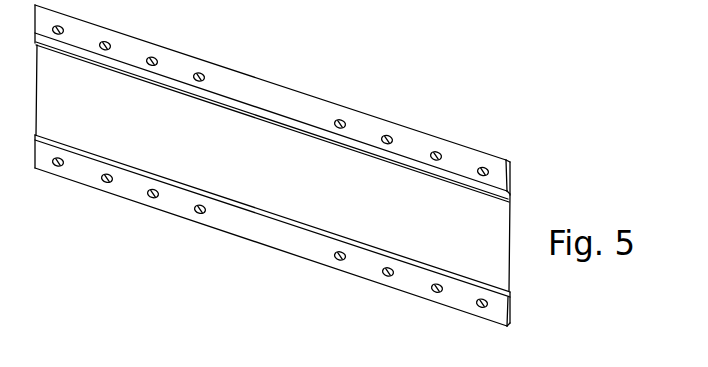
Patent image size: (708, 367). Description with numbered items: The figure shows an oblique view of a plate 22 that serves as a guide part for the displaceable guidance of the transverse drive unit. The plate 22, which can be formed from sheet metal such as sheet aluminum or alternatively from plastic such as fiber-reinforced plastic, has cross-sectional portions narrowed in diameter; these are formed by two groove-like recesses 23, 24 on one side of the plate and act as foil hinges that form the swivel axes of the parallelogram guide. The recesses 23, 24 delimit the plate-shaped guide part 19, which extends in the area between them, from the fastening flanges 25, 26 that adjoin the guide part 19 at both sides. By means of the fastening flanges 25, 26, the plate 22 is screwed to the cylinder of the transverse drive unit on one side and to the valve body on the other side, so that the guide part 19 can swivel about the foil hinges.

The plate 22 is at (282, 173).
The guide part 19 is at (258, 186).
The fastening flange 25 is at (413, 148).
The groove-like recess 23 is at (452, 177).
The fastening flange 26 is at (283, 242).
The groove-like recess 24 is at (333, 242).